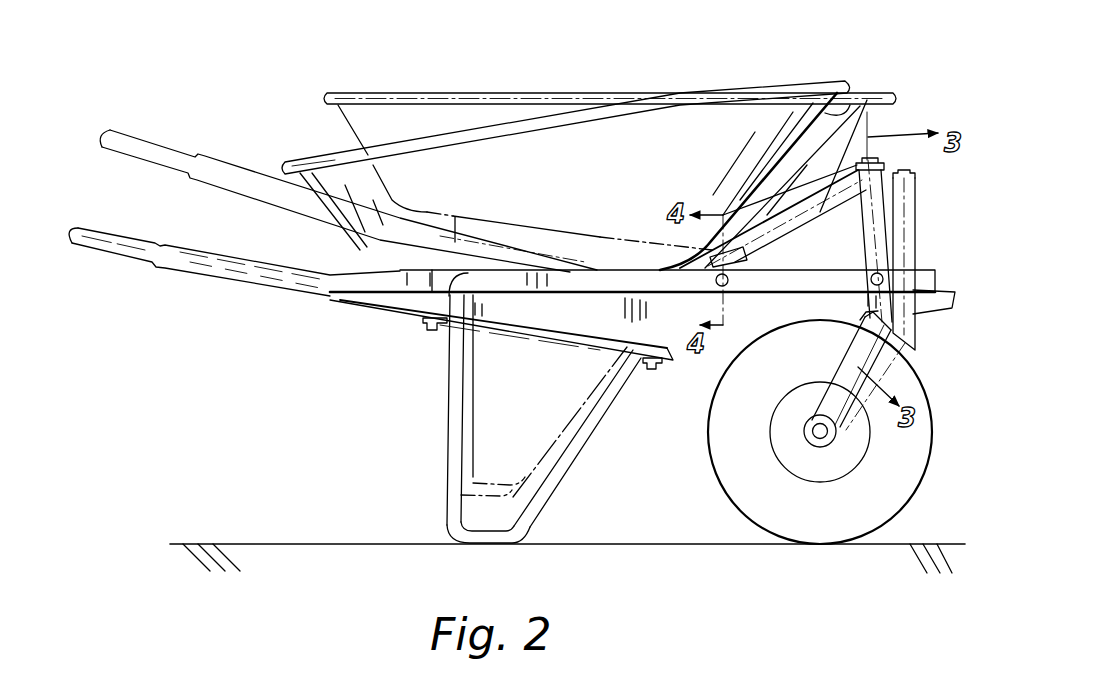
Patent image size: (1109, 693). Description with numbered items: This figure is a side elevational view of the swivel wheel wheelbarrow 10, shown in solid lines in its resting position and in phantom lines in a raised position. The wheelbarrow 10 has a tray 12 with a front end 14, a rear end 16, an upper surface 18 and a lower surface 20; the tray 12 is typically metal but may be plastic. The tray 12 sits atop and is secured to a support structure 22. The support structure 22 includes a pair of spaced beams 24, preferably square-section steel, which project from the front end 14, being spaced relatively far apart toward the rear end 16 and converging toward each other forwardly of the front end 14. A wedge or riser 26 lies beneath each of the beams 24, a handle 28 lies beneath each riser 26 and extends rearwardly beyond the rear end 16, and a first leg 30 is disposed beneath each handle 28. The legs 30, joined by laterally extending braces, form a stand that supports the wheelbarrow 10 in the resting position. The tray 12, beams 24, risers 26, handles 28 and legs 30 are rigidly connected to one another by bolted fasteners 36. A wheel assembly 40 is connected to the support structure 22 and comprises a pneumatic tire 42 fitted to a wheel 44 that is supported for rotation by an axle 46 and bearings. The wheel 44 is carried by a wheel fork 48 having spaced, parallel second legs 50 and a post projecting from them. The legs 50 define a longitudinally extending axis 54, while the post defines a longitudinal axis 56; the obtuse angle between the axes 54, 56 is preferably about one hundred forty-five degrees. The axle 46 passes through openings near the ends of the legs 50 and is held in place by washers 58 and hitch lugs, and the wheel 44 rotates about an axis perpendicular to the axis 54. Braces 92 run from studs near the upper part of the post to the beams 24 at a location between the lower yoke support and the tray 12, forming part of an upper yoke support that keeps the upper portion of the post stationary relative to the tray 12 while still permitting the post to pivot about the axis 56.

The swivel wheel wheelbarrow 10 is at (757, 78).
The tray 12 is at (589, 157).
The front end 14 is at (855, 112).
The rear end 16 is at (318, 203).
The upper surface 18 is at (510, 125).
The lower surface 20 is at (403, 272).
The support structure 22 is at (422, 407).
The beams 24 is at (614, 278).
The riser 26 is at (607, 330).
The handle 28 is at (276, 290).
The first leg 30 is at (573, 477).
The bolted fasteners 36 is at (430, 331).
The wheel assembly 40 is at (845, 432).
The pneumatic tire 42 is at (910, 468).
The wheel 44 is at (840, 463).
The axle 46 is at (806, 436).
The wheel fork 48 is at (923, 258).
The second legs 50 is at (853, 357).
The longitudinal axis of the legs 54 is at (862, 332).
The longitudinal axis of the post 56 is at (870, 136).
The washers 58 is at (838, 437).
The braces 92 is at (820, 200).